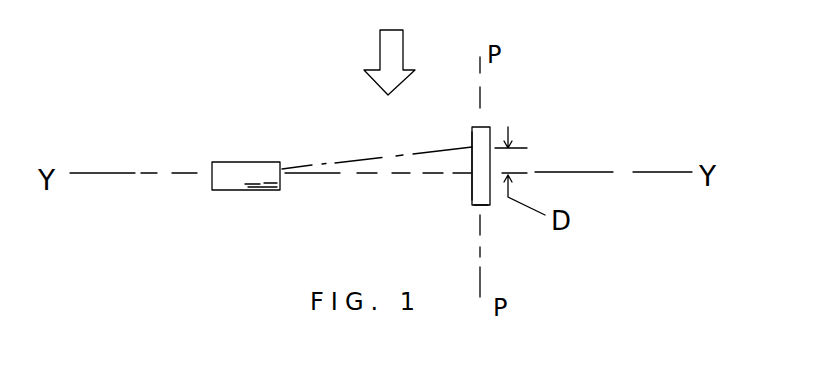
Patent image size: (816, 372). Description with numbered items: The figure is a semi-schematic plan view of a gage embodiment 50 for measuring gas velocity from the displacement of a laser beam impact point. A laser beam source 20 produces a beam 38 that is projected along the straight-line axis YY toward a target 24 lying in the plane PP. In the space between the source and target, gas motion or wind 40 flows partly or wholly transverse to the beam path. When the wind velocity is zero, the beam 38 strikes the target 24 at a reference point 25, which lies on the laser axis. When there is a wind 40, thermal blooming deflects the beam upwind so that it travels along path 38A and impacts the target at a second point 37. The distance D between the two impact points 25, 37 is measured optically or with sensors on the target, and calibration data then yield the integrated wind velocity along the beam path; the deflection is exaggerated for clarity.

The laser beam source 20 is at (240, 190).
The target 24 is at (485, 123).
The reference point 25 is at (468, 180).
The impact point 37 is at (468, 152).
The beam 38 is at (413, 177).
The path 38A is at (413, 152).
The gas motion (wind) 40 is at (403, 48).
The gage embodiment 50 is at (186, 298).